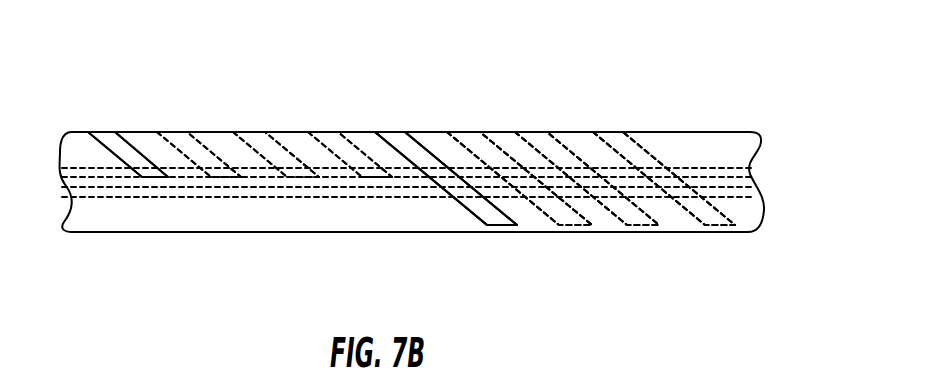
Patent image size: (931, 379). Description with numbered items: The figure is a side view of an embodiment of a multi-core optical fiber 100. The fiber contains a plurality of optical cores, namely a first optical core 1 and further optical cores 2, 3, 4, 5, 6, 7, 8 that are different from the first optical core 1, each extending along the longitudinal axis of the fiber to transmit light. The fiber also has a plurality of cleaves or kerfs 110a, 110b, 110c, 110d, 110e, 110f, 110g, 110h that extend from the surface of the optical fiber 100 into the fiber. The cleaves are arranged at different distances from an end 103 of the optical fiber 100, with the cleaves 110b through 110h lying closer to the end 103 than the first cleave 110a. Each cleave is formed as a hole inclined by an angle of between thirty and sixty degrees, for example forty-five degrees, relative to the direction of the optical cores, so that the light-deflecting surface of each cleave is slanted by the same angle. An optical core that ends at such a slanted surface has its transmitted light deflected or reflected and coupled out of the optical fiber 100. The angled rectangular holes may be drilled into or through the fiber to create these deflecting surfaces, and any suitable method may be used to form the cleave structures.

The multi-core optical fiber 100 is at (388, 89).
The end of the optical fiber 103 is at (762, 180).
The first cleave or kerf 110a is at (142, 168).
The second cleave or kerf 110b is at (217, 168).
The cleave or kerf 110c is at (292, 168).
The cleave or kerf 110d is at (367, 178).
The cleave or kerf 110e is at (492, 215).
The cleave or kerf 110f is at (567, 220).
The cleave or kerf 110g is at (637, 222).
The cleave or kerf 110h is at (710, 215).
The first optical core 1 is at (104, 170).
The second optical core 2 is at (185, 170).
The optical core 3 is at (257, 168).
The optical core 4 is at (325, 170).
The optical core 5 is at (437, 190).
The optical core 6 is at (512, 195).
The optical core 7 is at (582, 192).
The optical core 8 is at (655, 192).